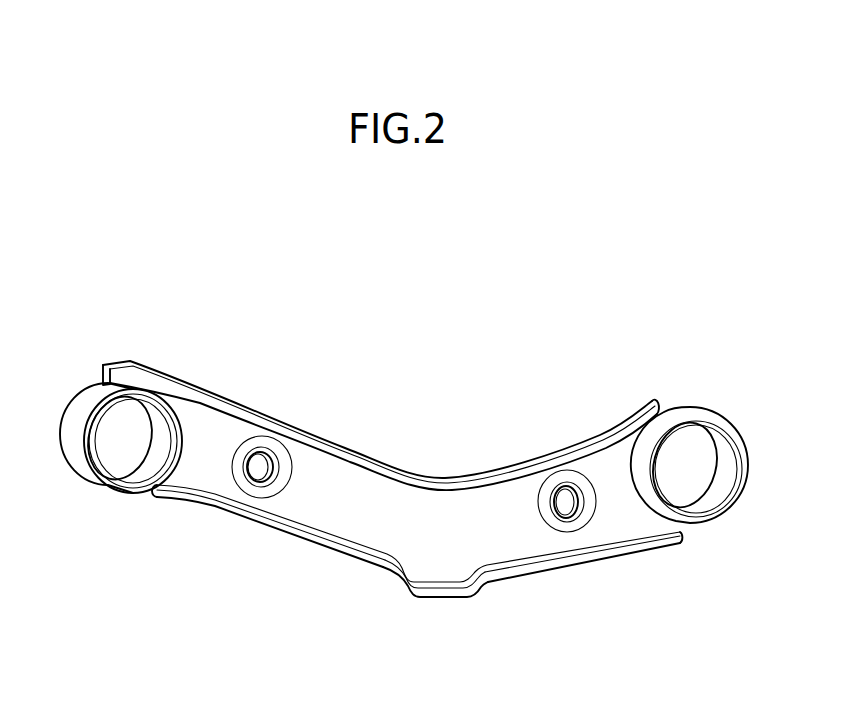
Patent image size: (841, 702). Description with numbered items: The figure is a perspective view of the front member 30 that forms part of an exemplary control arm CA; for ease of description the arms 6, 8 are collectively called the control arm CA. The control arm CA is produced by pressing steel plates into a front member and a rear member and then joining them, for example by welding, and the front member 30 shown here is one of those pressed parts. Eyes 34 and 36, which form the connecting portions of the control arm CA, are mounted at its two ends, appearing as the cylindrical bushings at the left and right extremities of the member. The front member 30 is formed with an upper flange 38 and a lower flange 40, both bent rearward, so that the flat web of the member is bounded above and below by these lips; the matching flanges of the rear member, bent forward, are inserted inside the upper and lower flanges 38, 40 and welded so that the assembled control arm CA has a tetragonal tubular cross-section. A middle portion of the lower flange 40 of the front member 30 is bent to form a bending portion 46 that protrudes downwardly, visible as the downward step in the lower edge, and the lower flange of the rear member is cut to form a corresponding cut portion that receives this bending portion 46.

The control arm CA is at (433, 392).
The control arm 6 is at (400, 503).
The control arm 8 is at (400, 503).
The front member 30 is at (212, 427).
The eye 34 is at (75, 450).
The eye 36 is at (725, 442).
The upper flange 38 is at (302, 428).
The lower flange 40 is at (288, 525).
The bending portion 46 is at (438, 596).